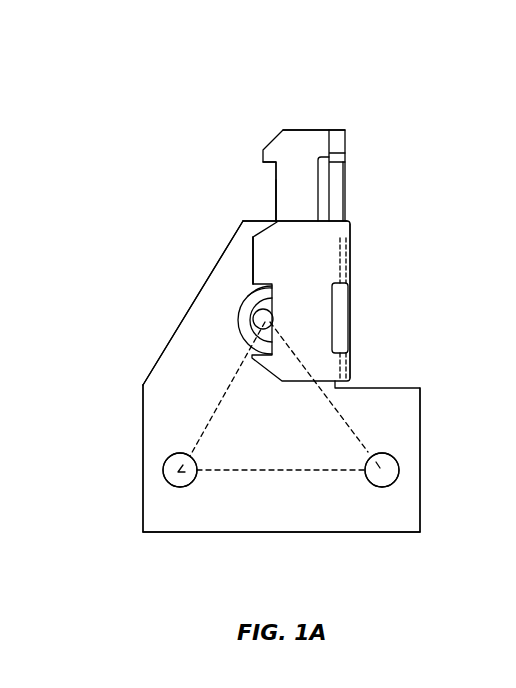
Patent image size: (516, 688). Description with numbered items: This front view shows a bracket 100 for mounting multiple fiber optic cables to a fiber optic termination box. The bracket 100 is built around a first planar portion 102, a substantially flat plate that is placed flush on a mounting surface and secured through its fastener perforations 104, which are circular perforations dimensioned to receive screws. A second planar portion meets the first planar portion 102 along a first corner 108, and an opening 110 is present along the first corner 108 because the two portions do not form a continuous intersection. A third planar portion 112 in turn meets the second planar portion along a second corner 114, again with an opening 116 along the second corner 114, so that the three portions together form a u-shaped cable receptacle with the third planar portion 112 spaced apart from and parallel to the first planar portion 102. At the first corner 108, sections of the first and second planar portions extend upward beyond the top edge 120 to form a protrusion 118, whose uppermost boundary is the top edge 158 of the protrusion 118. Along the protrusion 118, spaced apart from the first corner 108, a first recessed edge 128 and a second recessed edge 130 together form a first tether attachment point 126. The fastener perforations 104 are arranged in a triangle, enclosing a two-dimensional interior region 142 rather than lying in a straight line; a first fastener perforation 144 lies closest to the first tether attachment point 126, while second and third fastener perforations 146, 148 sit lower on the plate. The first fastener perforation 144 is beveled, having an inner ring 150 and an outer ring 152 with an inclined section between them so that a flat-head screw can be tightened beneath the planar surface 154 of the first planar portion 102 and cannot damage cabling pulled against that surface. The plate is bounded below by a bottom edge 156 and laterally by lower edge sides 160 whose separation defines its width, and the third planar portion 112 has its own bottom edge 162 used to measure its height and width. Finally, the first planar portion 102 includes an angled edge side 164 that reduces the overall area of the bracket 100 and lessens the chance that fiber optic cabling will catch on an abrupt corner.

The bracket 100 is at (275, 301).
The first planar portion 102 is at (201, 392).
The fastener perforations 104 is at (256, 292).
The first corner 108 is at (345, 140).
The opening 110 is at (328, 188).
The third planar portion 112 is at (322, 260).
The second corner 114 is at (351, 262).
The opening 116 is at (338, 320).
The protrusion 118 is at (256, 131).
The top edge 120 is at (250, 221).
The first tether attachment point 126 is at (225, 186).
The first recessed edge 128 is at (275, 182).
The second recessed edge 130 is at (346, 206).
The two-dimensional interior region 142 is at (344, 420).
The first fastener perforation 144 is at (254, 340).
The second fastener perforation 146 is at (164, 468).
The third fastener perforation 148 is at (398, 476).
The inner ring 150 is at (242, 308).
The outer ring 152 is at (253, 322).
The planar surface 154 is at (267, 504).
The bottom edge 156 is at (317, 533).
The top edge of the protrusion 158 is at (302, 129).
The lower edge sides 160 is at (421, 458).
The bottom edge 162 is at (253, 260).
The angled edge side 164 is at (161, 356).